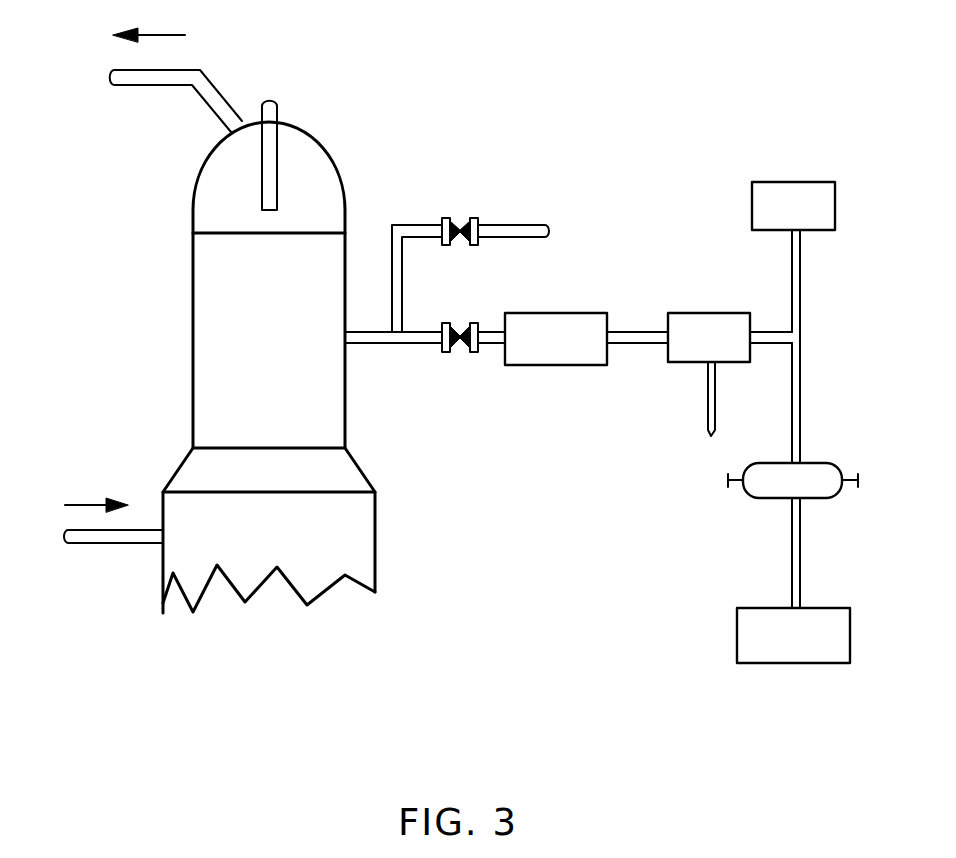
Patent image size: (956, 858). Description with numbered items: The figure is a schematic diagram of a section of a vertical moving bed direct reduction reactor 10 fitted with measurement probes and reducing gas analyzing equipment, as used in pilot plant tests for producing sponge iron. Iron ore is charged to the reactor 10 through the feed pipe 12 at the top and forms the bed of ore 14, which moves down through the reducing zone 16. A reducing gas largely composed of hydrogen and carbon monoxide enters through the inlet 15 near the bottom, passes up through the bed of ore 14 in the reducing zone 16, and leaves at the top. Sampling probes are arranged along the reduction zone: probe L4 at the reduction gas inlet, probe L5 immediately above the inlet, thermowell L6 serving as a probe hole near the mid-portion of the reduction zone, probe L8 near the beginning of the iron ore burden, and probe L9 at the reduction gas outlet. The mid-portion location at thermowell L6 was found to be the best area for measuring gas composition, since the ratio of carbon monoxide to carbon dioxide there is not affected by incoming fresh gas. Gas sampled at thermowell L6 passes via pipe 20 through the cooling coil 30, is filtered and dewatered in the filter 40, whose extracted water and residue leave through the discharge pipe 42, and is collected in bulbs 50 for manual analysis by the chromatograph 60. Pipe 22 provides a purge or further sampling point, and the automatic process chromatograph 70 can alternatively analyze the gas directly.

The direct reduction reactor 10 is at (191, 439).
The feed pipe 12 is at (272, 100).
The bed of ore 14 is at (220, 232).
The inlet 15 is at (110, 538).
The reducing zone 16 is at (293, 383).
The pipe 20 is at (483, 328).
The pipe 22 is at (513, 230).
The cooling coil 30 is at (520, 366).
The filter 40 is at (743, 312).
The discharge pipe 42 is at (710, 408).
The bulbs 50 is at (768, 500).
The chromatograph 60 is at (755, 608).
The automatic process chromatograph 70 is at (800, 190).
The probe L4 is at (348, 485).
The probe L5 is at (332, 463).
The thermowell L6 is at (328, 330).
The probe L8 is at (230, 253).
The probe L9 is at (198, 79).